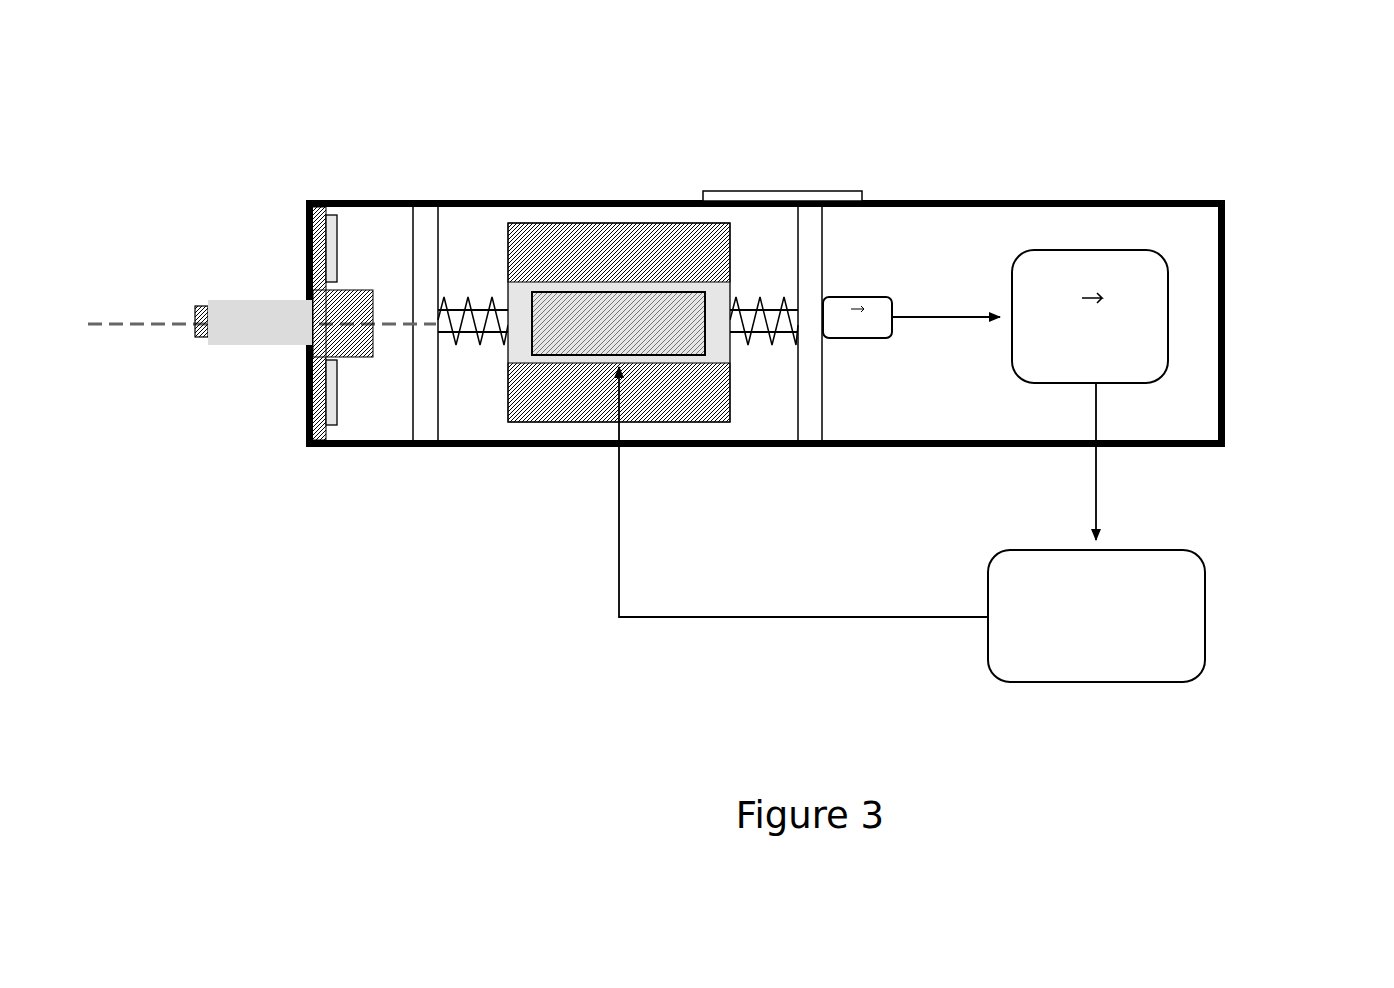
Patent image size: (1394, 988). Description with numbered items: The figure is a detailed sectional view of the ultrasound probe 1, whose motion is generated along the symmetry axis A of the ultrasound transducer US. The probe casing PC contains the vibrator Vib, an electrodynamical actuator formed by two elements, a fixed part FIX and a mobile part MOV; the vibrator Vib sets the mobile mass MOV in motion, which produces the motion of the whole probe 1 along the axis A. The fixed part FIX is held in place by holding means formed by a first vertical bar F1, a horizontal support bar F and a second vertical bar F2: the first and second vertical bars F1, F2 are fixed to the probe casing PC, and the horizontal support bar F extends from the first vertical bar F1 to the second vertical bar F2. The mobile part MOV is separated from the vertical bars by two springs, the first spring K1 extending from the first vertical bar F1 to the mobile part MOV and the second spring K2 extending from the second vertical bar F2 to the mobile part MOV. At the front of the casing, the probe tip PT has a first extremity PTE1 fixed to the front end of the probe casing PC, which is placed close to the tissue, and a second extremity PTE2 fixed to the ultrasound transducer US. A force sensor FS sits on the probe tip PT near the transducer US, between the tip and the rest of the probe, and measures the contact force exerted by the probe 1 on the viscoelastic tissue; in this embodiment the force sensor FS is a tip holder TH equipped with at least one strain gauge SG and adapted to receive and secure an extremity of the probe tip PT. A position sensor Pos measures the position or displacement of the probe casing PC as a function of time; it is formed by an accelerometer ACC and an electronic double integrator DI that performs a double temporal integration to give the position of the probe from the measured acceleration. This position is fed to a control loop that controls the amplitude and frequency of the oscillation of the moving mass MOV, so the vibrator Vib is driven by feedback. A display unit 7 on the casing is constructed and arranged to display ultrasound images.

The ultrasound probe 1 is at (386, 138).
The display unit 7 is at (782, 190).
The symmetry axis A is at (120, 308).
The ultrasound transducer US is at (197, 300).
The probe tip PT is at (273, 357).
The first extremity of the probe tip PTE1 is at (310, 320).
The second extremity of the probe tip PTE2 is at (210, 322).
The force sensor FS is at (377, 423).
The tip holder TH is at (323, 425).
The strain gauge SG is at (340, 254).
The first vertical bar F1 is at (433, 405).
The second vertical bar F2 is at (811, 383).
The horizontal support bar F is at (520, 340).
The first spring K1 is at (485, 309).
The second spring K2 is at (751, 309).
The vibrator Vib is at (619, 242).
The mobile part MOV is at (542, 250).
The fixed part FIX is at (641, 310).
The position sensor Pos is at (1038, 208).
The accelerometer ACC is at (860, 287).
The double integrator DI is at (1090, 250).
The probe casing PC is at (1225, 268).